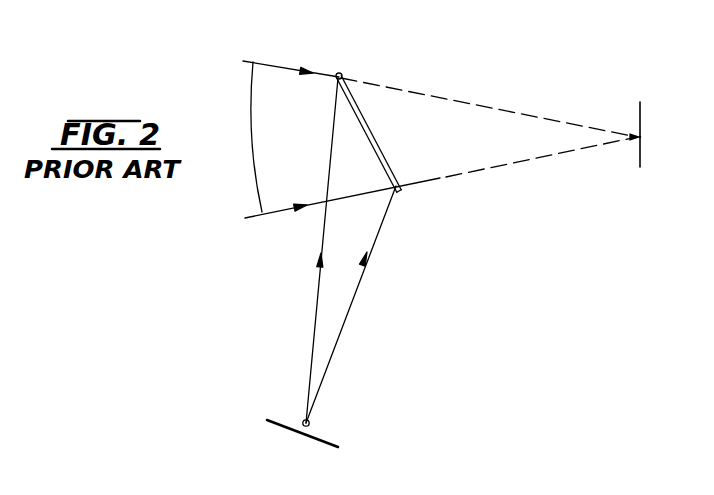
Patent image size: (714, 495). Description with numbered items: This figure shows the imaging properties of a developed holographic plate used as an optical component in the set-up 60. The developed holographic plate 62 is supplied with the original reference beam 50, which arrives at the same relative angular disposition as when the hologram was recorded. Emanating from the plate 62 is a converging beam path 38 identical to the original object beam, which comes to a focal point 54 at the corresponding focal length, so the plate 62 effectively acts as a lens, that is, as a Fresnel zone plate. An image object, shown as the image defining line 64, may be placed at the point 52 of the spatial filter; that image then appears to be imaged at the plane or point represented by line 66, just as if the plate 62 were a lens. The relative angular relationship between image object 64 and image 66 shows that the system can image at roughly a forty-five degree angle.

The converging beam path 38 is at (262, 87).
The reference beam 50 is at (360, 242).
The point of the spatial filter 52 is at (303, 414).
The focal point 54 is at (640, 140).
The set-up 60 is at (471, 64).
The developed holographic plate 62 is at (398, 172).
The image defining line 64 is at (281, 426).
The image line 66 is at (640, 112).